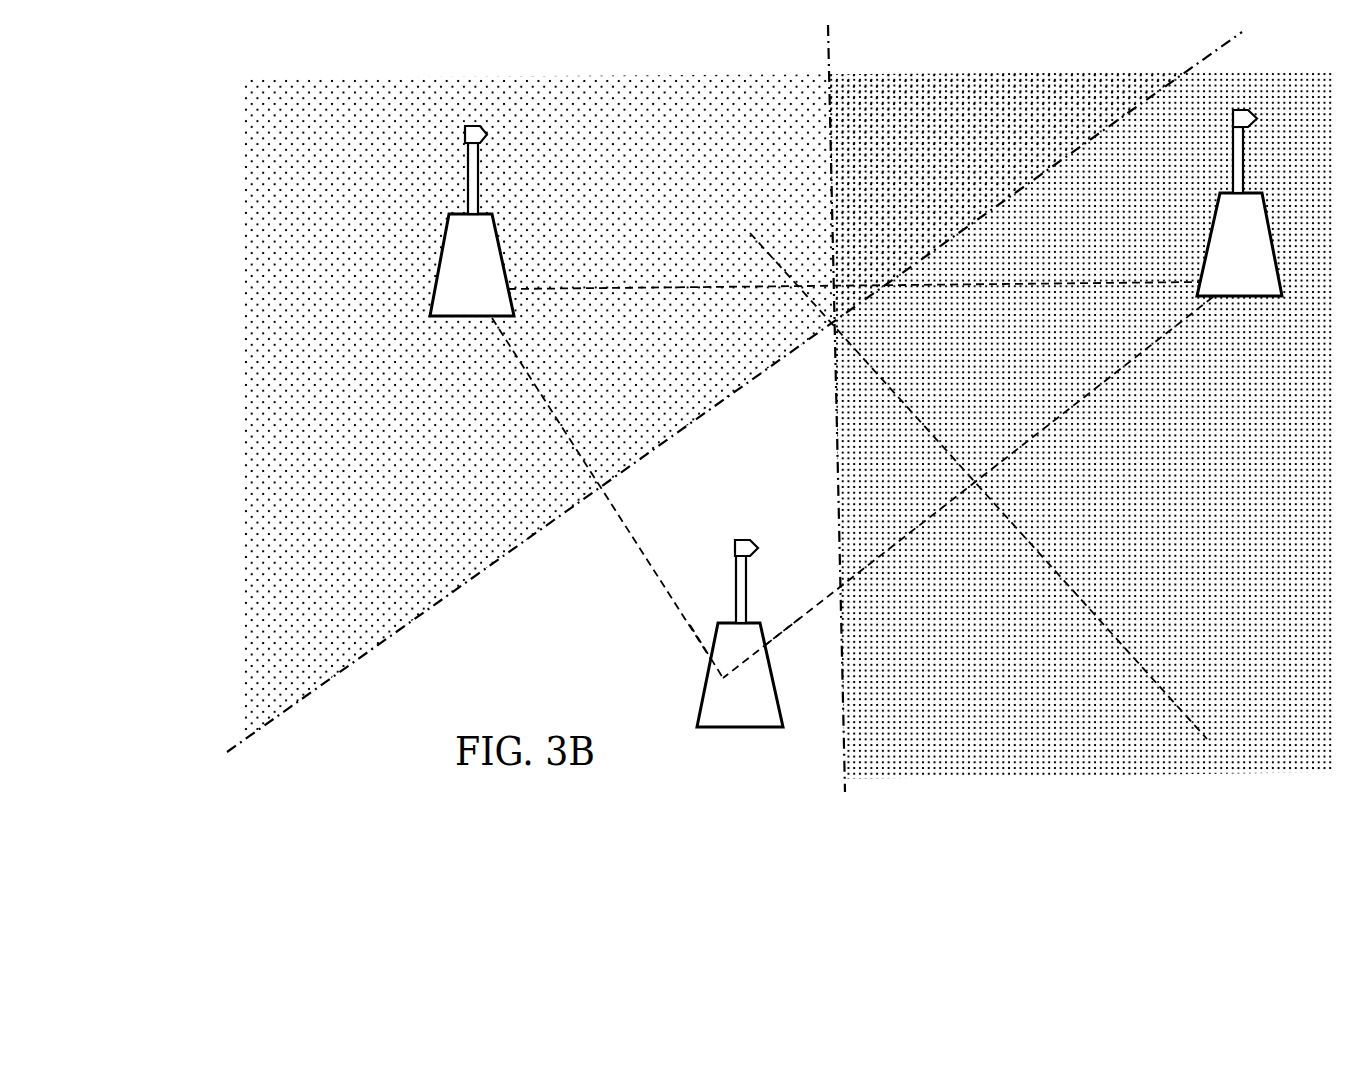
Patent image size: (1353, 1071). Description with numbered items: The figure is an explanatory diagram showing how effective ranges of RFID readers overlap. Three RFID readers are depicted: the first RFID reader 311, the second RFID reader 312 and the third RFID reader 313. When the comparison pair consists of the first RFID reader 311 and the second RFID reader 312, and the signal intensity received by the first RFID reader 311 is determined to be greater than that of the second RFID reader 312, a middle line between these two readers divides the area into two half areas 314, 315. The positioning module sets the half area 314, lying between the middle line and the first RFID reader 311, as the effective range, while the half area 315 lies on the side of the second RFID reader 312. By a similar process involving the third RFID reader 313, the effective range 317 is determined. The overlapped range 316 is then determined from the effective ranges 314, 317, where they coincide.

The first RFID reader 311 is at (493, 298).
The second RFID reader 312 is at (765, 722).
The third RFID reader 313 is at (1262, 277).
The half area 314 is at (414, 558).
The half area 315 is at (532, 666).
The overlapped range 316 is at (944, 170).
The effective range 317 is at (1193, 426).